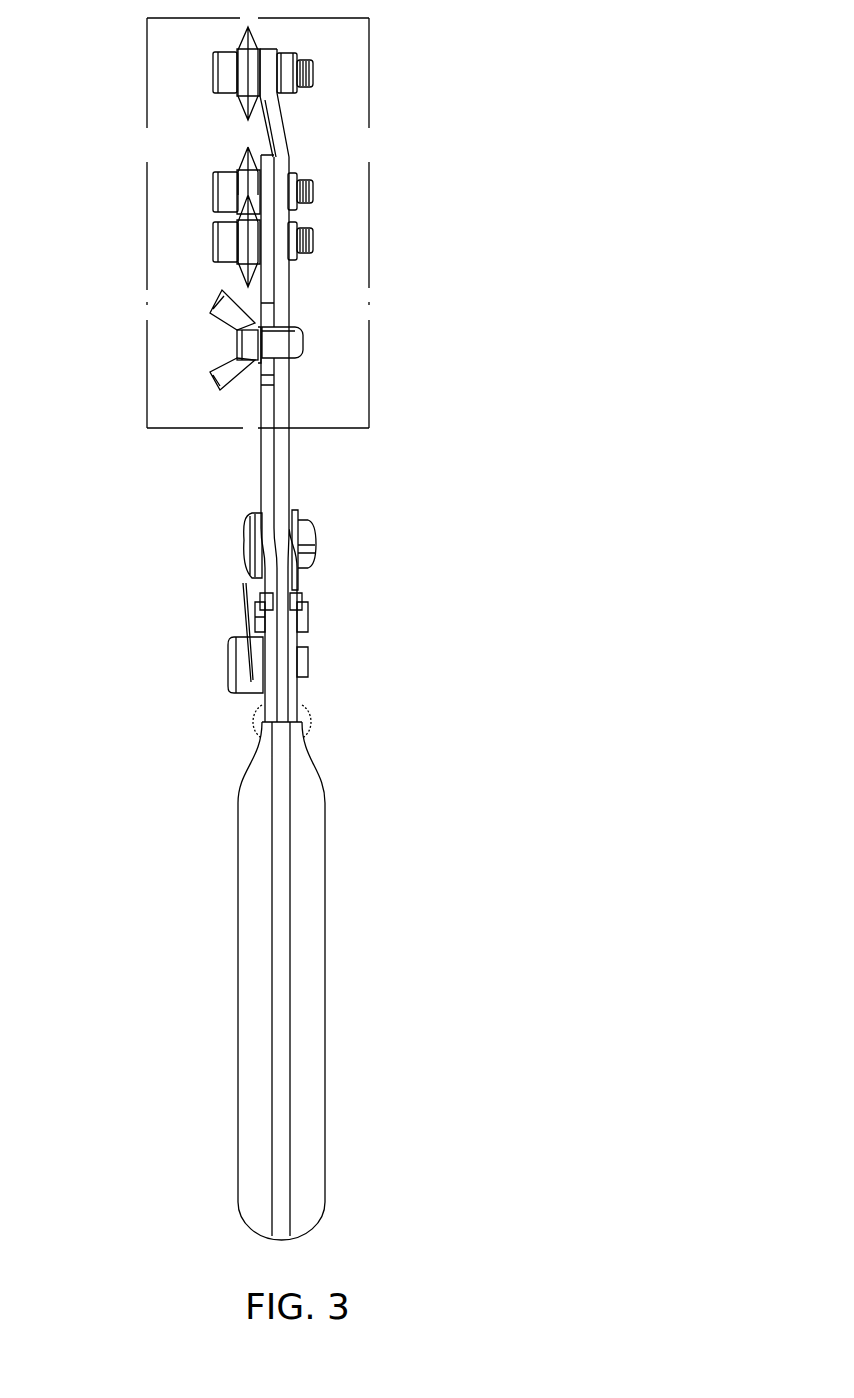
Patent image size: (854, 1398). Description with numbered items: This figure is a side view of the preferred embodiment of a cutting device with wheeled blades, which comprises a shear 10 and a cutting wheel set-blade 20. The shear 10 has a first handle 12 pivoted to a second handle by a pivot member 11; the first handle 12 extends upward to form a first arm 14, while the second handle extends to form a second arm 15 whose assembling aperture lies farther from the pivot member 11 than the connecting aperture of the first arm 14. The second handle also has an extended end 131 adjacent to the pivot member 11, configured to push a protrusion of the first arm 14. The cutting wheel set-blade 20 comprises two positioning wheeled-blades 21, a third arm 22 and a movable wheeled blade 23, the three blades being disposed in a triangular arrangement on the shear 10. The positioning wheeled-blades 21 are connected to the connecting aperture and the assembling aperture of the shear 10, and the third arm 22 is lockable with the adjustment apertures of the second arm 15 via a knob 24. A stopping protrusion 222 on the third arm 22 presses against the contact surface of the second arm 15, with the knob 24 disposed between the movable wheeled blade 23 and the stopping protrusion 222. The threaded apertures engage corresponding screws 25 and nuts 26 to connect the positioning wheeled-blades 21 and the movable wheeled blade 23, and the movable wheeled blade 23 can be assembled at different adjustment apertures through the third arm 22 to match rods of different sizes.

The shear 10 is at (337, 558).
The pivot member 11 is at (257, 540).
The first handle 12 is at (303, 937).
The extended end 131 is at (248, 602).
The first arm 14 is at (267, 458).
The second arm 15 is at (287, 134).
The cutting wheel set-blade 20 is at (218, 132).
The positioning wheeled-blades 21 is at (240, 37).
The third arm 22 is at (268, 243).
The stopping protrusion 222 is at (305, 338).
The movable wheeled blade 23 is at (245, 237).
The knob 24 is at (247, 343).
The screws 25 is at (223, 71).
The nuts 26 is at (313, 72).